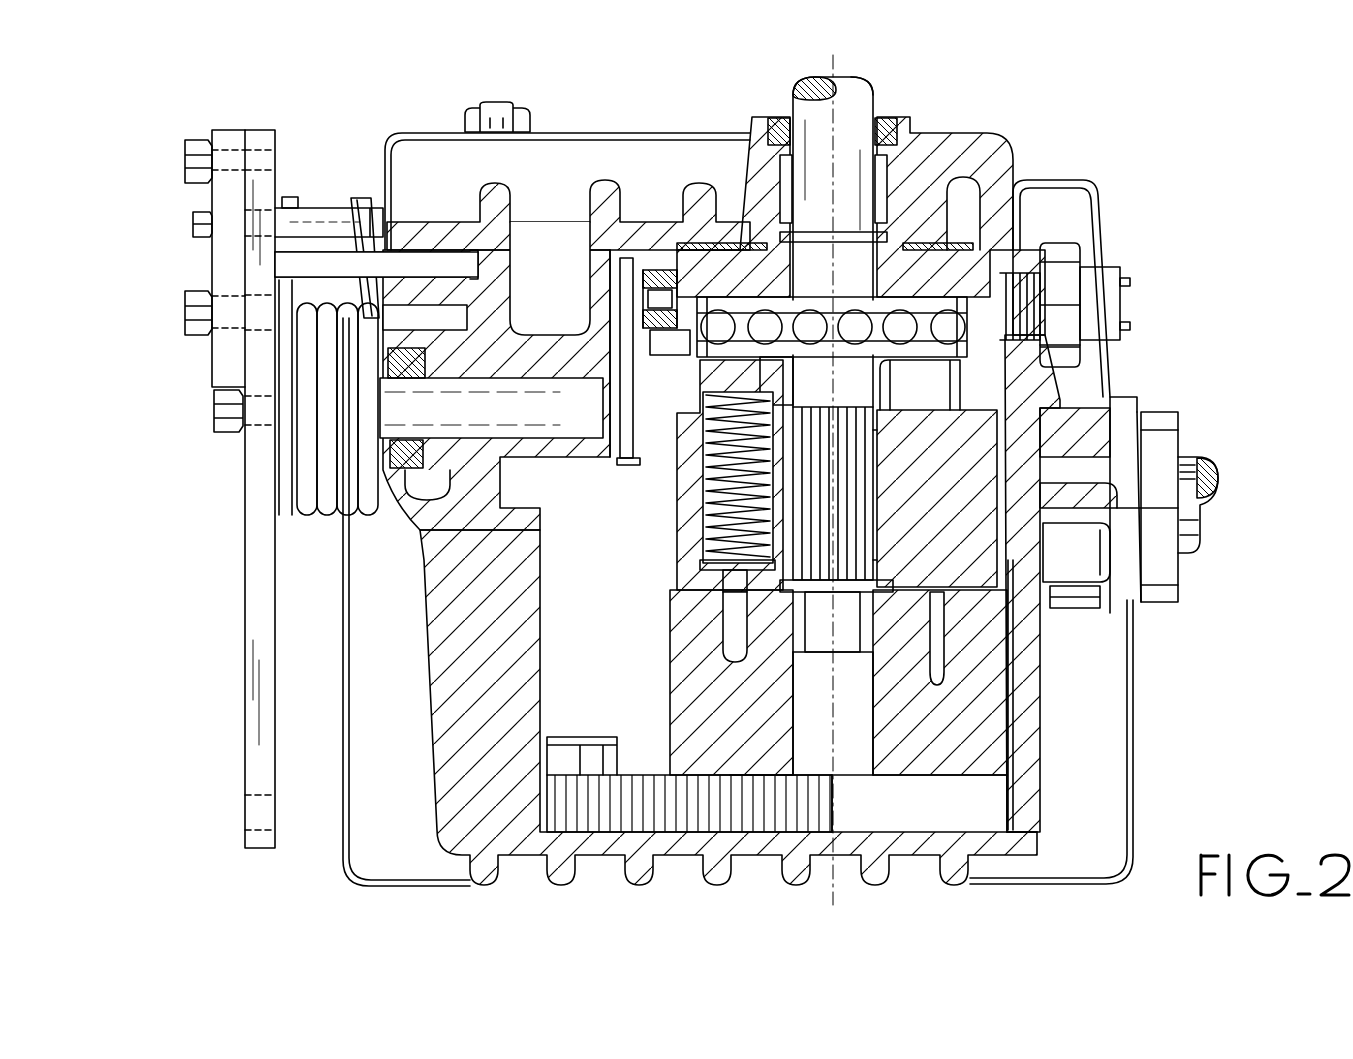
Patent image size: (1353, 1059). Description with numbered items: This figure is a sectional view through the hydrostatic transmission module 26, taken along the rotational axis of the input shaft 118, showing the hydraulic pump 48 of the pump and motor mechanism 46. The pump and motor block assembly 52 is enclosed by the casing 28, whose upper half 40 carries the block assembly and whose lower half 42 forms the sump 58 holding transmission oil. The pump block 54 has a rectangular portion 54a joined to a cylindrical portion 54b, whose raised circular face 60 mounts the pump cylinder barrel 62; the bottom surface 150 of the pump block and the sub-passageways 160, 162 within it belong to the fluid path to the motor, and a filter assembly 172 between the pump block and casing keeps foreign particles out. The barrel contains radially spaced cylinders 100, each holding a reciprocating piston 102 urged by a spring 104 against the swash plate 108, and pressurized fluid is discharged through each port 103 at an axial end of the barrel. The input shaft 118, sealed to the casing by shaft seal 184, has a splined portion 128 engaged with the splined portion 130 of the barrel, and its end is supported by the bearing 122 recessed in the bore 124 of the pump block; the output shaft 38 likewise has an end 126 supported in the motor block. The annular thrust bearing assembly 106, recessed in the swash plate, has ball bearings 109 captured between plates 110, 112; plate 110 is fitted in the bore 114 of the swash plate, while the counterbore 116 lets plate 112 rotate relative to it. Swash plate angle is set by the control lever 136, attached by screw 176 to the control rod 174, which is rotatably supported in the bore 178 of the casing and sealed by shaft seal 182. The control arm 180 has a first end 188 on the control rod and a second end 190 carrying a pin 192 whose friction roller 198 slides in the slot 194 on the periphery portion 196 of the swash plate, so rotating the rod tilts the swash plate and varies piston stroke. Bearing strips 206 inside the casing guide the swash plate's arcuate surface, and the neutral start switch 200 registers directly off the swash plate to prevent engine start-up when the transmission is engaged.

The hydrostatic transmission module 26 is at (644, 94).
The casing 28 is at (977, 133).
The output shaft 38 is at (1210, 478).
The upper half 40 is at (1015, 453).
The lower half 42 is at (440, 733).
The pump and motor mechanism 46 is at (1012, 558).
The hydraulic pump 48 is at (1012, 413).
The pump and motor block assembly 52 is at (1000, 775).
The pump block 54 is at (985, 698).
The rectangular portion 54a is at (630, 730).
The cylindrical portion 54b is at (1010, 728).
The sump 58 is at (1000, 820).
The raised circular face 60 is at (700, 590).
The pump cylinder barrel 62 is at (1052, 430).
The cylinders 100 is at (700, 515).
The reciprocating piston 102 is at (700, 378).
The port 103 is at (740, 597).
The springs 104 is at (710, 543).
The annular thrust bearing assembly 106 is at (1016, 268).
The swash plate 108 is at (968, 292).
The ball bearings 109 is at (856, 330).
The plate 110 is at (800, 300).
The plate 112 is at (836, 352).
The bore 114 is at (690, 248).
The counterbore 116 is at (712, 325).
The input shaft 118 is at (862, 93).
The bearing 122 is at (870, 598).
The bore 124 is at (870, 615).
The end 126 is at (847, 640).
The splined portion 128 is at (858, 457).
The splined portion 130 is at (862, 512).
The control lever 136 is at (248, 738).
The bottom surface 150 is at (920, 773).
The sub-passageway 160 is at (740, 688).
The sub-passageway 162 is at (833, 713).
The filter assembly 172 is at (703, 815).
The control rod 174 is at (400, 428).
The screw 176 is at (213, 410).
The bore 178 is at (485, 470).
The control arm 180 is at (627, 380).
The shaft seal 182 is at (400, 470).
The shaft seal 184 is at (895, 118).
The first end 188 is at (630, 462).
The second end 190 is at (660, 290).
The pin 192 is at (630, 277).
The slot 194 is at (653, 347).
The periphery portion 196 is at (1042, 352).
The friction roller 198 is at (650, 307).
The neutral start switch 200 is at (1108, 270).
The bearing strips 206 is at (738, 262).